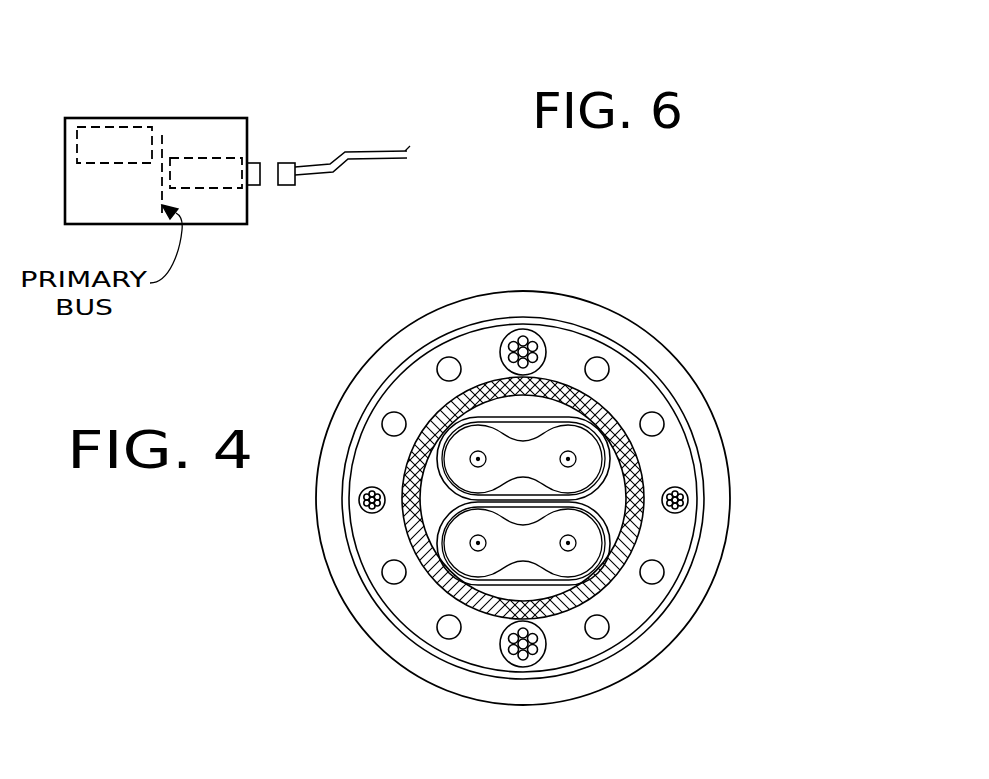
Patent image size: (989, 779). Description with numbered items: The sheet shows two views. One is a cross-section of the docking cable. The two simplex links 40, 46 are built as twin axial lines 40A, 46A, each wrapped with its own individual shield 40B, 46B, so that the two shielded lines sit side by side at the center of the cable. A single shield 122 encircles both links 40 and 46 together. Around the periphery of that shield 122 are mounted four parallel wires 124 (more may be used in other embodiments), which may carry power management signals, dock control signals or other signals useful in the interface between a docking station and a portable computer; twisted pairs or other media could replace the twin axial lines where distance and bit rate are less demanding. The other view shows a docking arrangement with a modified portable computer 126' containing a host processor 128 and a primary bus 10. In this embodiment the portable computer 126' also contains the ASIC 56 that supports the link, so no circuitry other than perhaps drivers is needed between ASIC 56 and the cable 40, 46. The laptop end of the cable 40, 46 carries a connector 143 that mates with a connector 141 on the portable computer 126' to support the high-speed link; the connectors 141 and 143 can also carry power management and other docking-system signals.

In FIG. 6, the primary bus / laptop system 10 is at (157, 182).
In FIG. 6, the ASIC 56 is at (217, 189).
In FIG. 6, the host processor 128 is at (82, 127).
In FIG. 6, the modified portable computer 126' is at (181, 130).
In FIG. 6, the connector 141 is at (253, 163).
In FIG. 6, the connector 143 is at (283, 186).
In FIG. 6, the simplex link 40 is at (400, 153).
In FIG. 4, the simplex link 40 is at (528, 405).
In FIG. 6, the simplex link 46 is at (353, 161).
In FIG. 4, the simplex link 46 is at (422, 609).
In FIG. 4, the twin axial line 40A is at (462, 440).
In FIG. 4, the individual shield 40B is at (543, 418).
In FIG. 4, the twin axial line 46A is at (455, 556).
In FIG. 4, the individual shield 46B is at (488, 590).
In FIG. 4, the single shield 122 is at (663, 542).
In FIG. 4, the parallel wires 124 is at (553, 335).